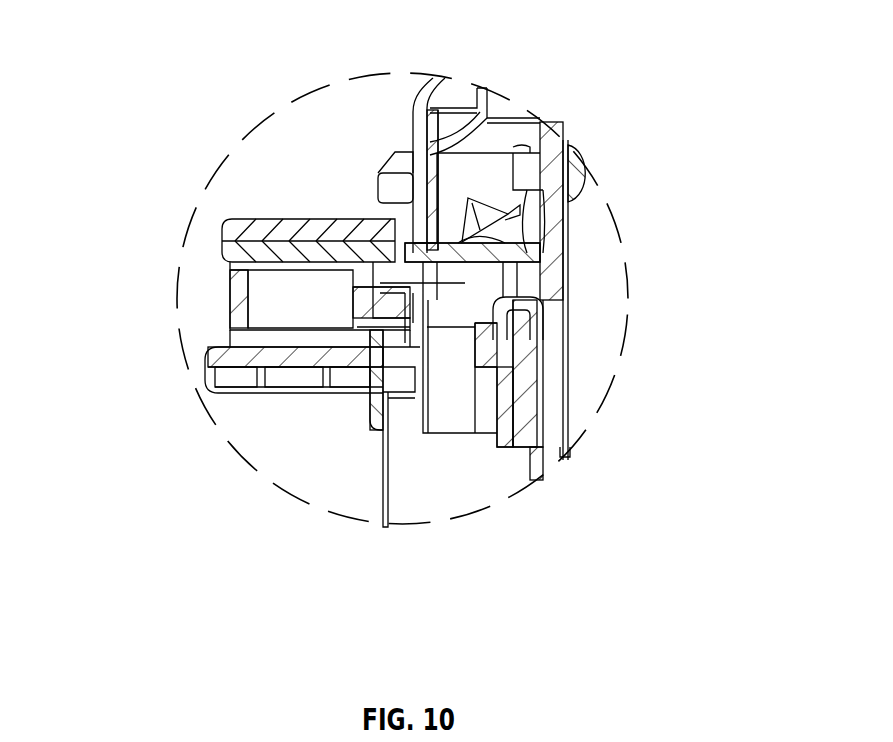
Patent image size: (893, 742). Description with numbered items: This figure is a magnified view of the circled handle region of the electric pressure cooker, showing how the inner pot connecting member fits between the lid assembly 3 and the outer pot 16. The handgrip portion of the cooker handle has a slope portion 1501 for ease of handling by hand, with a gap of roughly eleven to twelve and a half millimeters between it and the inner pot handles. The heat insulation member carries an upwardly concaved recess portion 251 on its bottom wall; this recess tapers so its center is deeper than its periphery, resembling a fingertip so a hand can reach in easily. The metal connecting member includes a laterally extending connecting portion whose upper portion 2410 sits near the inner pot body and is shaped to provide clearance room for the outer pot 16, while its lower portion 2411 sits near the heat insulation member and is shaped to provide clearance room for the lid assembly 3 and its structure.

The lid assembly 3 is at (423, 177).
The recess portion 251 is at (286, 270).
The slope portion 1501 is at (232, 350).
The upper portion 2410 is at (507, 248).
The outer pot 16 is at (513, 296).
The lower portion 2411 is at (415, 272).